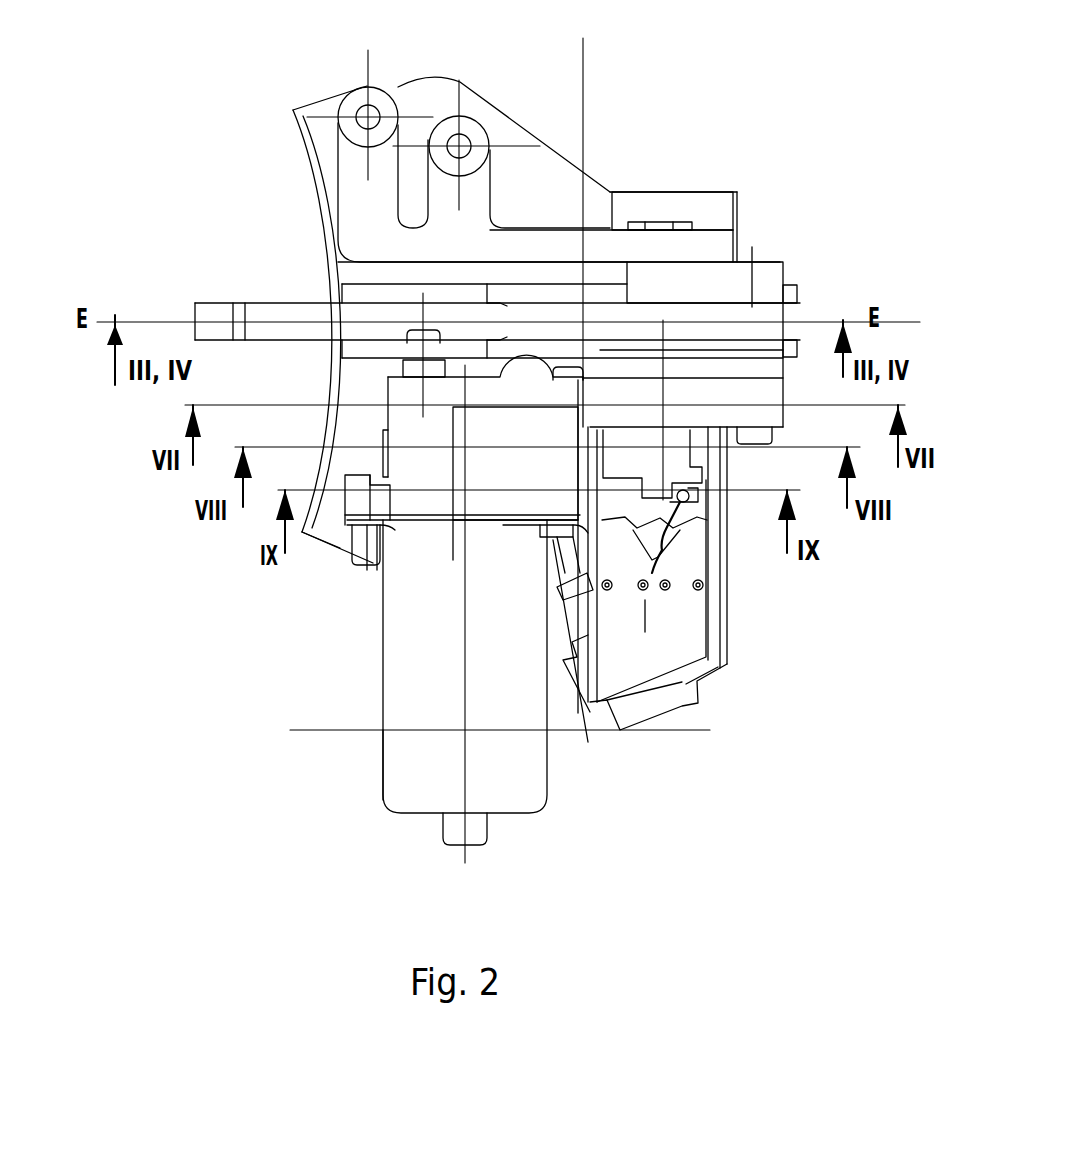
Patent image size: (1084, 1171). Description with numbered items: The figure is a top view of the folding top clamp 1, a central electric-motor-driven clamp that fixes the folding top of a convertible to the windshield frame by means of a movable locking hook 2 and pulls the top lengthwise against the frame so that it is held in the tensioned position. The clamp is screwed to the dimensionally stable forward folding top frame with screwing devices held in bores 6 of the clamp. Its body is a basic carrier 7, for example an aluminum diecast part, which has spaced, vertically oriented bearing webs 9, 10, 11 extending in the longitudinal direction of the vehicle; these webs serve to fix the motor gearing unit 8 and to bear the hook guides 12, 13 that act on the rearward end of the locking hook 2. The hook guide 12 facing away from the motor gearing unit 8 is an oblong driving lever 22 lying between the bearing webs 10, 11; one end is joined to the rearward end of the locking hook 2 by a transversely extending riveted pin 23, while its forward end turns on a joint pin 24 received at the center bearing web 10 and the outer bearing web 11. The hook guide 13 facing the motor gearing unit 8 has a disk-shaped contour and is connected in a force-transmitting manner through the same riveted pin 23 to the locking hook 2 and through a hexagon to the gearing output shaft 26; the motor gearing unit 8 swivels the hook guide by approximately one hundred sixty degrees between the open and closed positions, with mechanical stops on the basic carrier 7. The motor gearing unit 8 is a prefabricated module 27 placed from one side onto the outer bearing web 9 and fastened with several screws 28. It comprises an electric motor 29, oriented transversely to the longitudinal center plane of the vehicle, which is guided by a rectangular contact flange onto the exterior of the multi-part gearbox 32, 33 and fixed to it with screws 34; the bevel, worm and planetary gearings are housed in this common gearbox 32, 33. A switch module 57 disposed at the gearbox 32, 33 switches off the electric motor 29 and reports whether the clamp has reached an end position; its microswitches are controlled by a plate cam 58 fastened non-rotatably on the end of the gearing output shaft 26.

The folding top clamp 1 is at (288, 96).
The locking hook 2 is at (212, 296).
The bores 6 is at (457, 128).
The basic carrier 7 is at (546, 186).
The motor gearing unit 8 is at (521, 818).
The bearing web 9 is at (368, 350).
The bearing web 10 is at (362, 287).
The bearing web 11 is at (700, 248).
The hook guide 12 is at (790, 252).
The hook guide 13 is at (770, 368).
The driving lever 22 is at (662, 274).
The riveted pin 23 is at (750, 250).
The joint pin 24 is at (668, 222).
The gearing output shaft 26 is at (665, 372).
The prefabricated module 27 is at (378, 637).
The screws 28 is at (744, 447).
The electric motor 29 is at (418, 773).
The gearbox part 32 is at (350, 500).
The gearbox part 33 is at (530, 480).
The screws 34 is at (365, 533).
The switch module 57 is at (710, 685).
The plate cam 58 is at (700, 497).